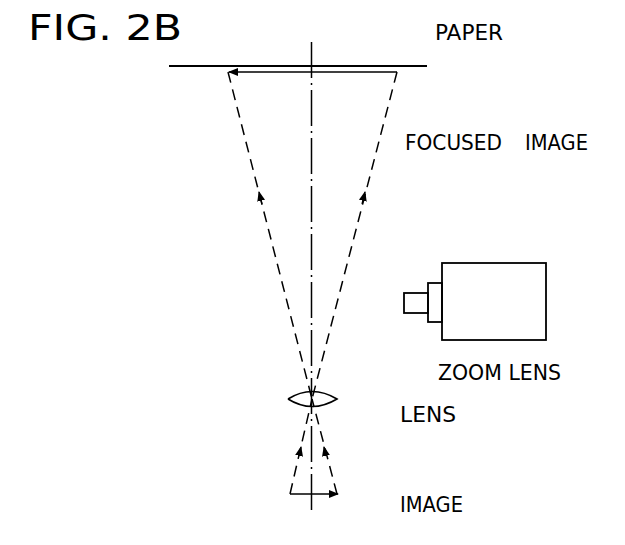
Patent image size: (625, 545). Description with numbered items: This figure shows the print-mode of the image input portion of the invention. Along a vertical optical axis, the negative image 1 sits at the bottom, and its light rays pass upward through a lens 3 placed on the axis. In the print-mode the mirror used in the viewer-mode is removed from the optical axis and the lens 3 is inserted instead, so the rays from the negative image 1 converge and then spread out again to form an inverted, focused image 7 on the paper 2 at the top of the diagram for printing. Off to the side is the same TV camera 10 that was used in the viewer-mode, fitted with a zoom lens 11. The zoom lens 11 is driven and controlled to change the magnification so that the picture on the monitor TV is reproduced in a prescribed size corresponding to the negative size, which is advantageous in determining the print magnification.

The negative image 1 is at (317, 494).
The paper 2 is at (372, 66).
The lens 3 is at (337, 400).
The image 7 is at (362, 72).
The TV camera 10 is at (485, 263).
The zoom lens 11 is at (415, 313).